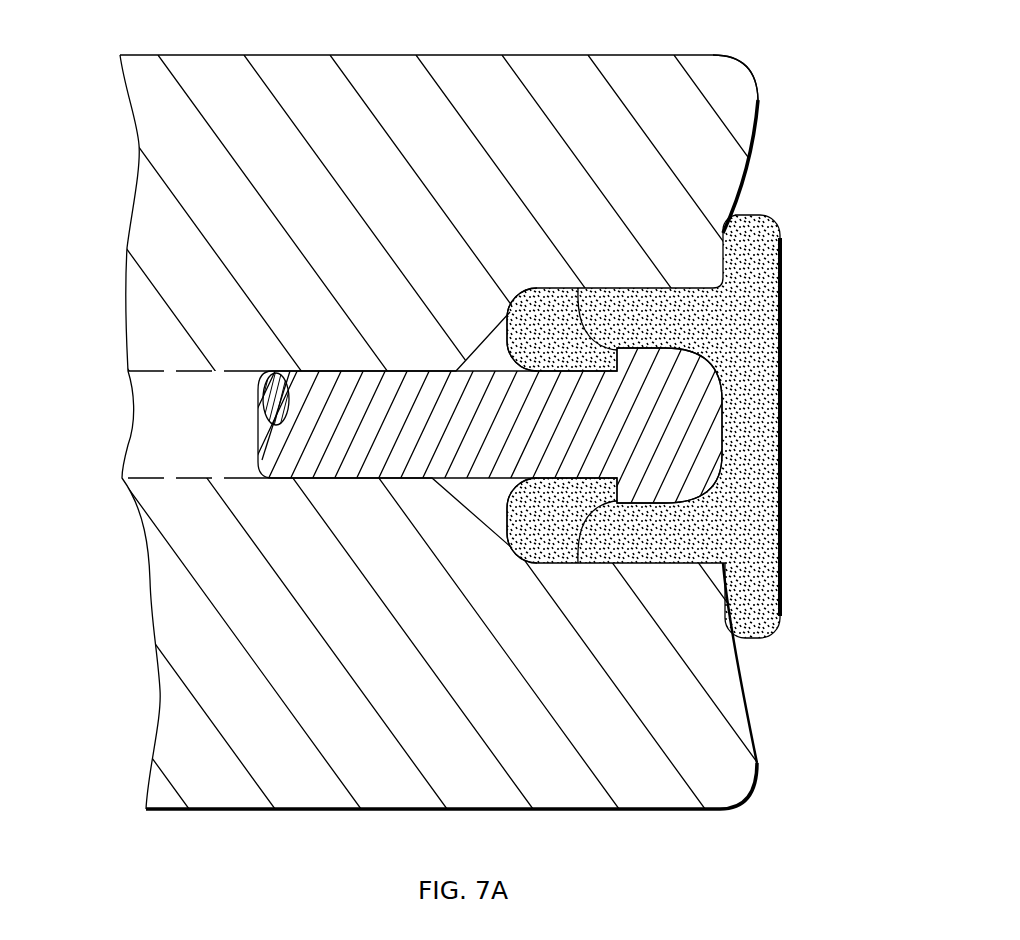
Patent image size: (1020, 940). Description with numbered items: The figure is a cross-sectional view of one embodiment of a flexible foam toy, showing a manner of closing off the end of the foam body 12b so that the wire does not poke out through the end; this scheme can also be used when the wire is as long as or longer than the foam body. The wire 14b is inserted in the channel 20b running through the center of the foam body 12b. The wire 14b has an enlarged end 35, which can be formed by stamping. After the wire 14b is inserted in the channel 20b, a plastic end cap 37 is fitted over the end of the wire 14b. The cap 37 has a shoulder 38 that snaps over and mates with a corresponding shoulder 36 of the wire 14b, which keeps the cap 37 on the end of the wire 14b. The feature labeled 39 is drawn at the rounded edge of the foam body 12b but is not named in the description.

The foam body 12b is at (553, 68).
The wire 14b is at (363, 377).
The channel 20b is at (148, 418).
The enlarged end 35 is at (720, 433).
The shoulder 36 is at (573, 563).
The plastic end cap 37 is at (773, 482).
The shoulder 38 is at (580, 289).
The rounded edge 39 is at (747, 127).